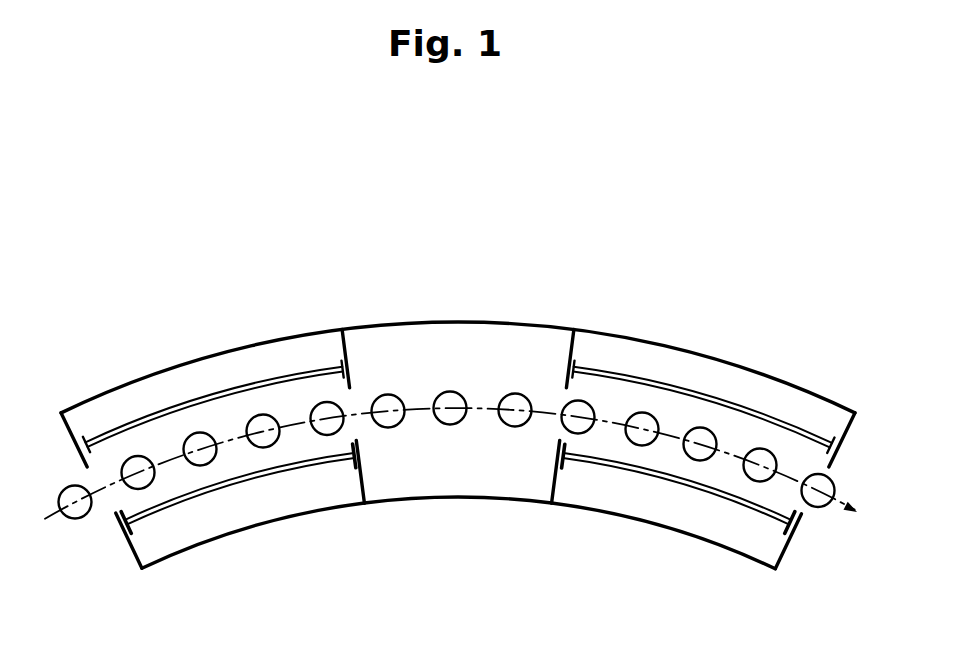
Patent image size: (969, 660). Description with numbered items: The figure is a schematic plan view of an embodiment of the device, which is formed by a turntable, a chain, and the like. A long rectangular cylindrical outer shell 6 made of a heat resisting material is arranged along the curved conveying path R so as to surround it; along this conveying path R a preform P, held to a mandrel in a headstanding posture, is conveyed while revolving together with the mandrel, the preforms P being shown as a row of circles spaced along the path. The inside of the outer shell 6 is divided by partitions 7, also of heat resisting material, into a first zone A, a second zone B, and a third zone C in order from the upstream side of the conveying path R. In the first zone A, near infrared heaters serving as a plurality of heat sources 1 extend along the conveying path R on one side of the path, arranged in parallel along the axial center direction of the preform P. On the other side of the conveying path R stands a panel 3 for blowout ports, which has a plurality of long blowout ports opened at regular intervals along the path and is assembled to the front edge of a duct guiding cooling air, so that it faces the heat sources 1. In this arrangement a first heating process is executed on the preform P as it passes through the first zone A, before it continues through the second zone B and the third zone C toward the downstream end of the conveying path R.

The heat source 1 is at (310, 466).
The panel for blowout ports 3 is at (234, 388).
The outer shell 6 is at (558, 326).
The partition 7 is at (349, 358).
The preform P is at (268, 412).
The conveying path R is at (417, 407).
The first zone A is at (225, 468).
The second zone B is at (447, 468).
The third zone C is at (662, 454).